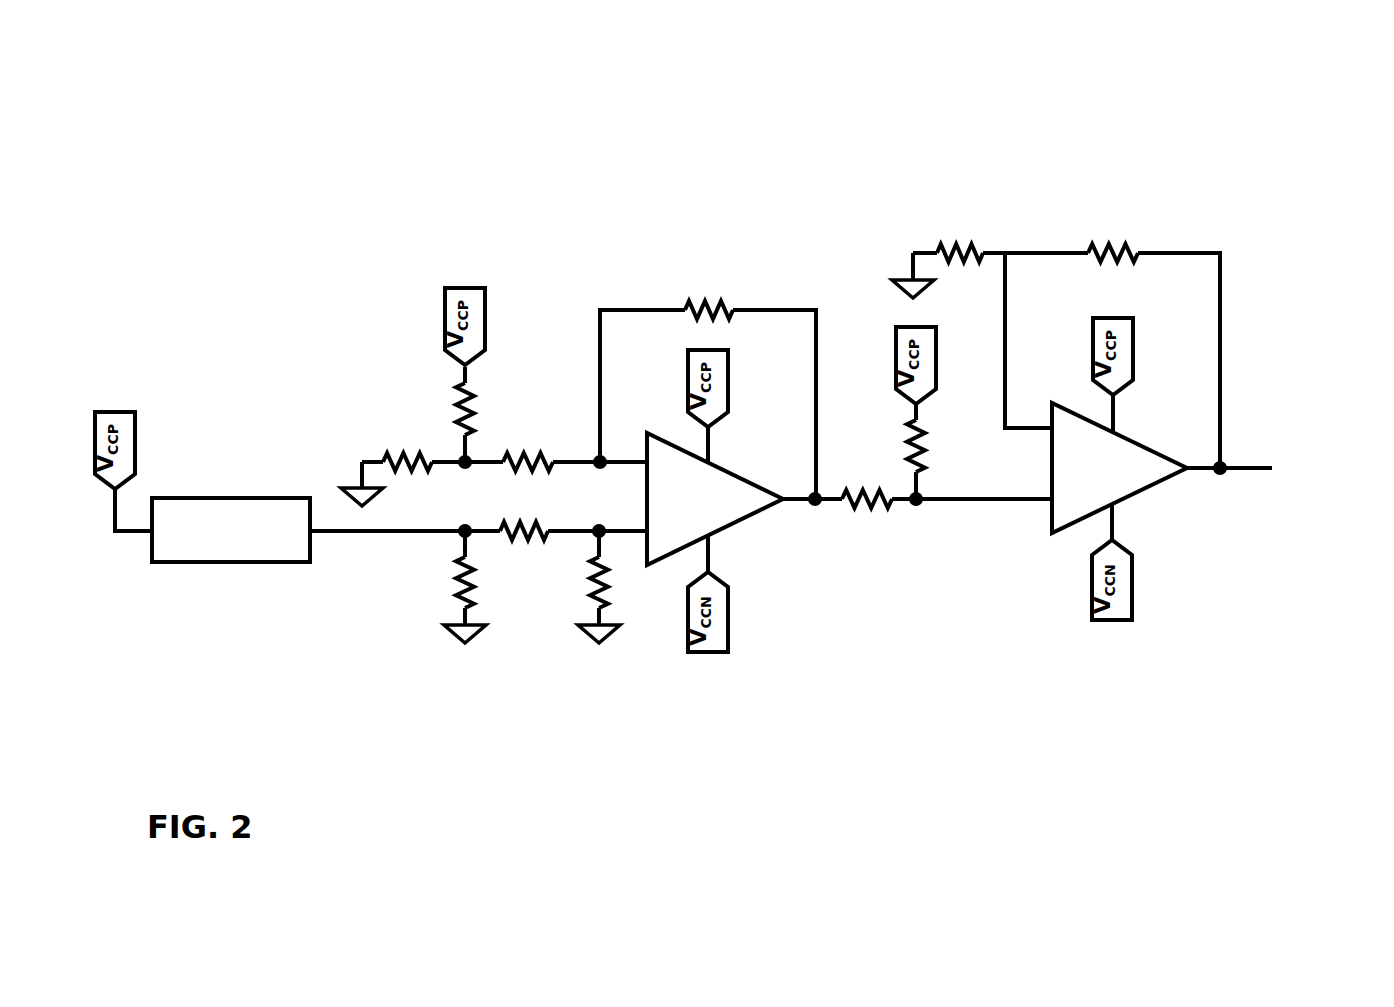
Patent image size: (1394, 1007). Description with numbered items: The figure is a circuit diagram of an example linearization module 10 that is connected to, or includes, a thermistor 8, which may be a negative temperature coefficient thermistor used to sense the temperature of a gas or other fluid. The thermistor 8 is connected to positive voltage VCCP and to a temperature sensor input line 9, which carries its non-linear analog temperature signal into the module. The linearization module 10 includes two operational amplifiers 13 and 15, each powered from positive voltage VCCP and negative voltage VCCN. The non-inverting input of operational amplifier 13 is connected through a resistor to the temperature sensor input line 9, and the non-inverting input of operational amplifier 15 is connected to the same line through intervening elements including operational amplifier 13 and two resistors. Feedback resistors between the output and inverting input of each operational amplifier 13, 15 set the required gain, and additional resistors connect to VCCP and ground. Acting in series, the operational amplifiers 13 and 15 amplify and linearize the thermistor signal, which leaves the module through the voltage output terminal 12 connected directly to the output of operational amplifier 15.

The linearization module 10 is at (262, 152).
The thermistor 8 is at (231, 530).
The temperature sensor input line 9 is at (363, 533).
The operational amplifier 13 is at (747, 520).
The operational amplifier 15 is at (1155, 487).
The voltage output terminal 12 is at (1252, 465).